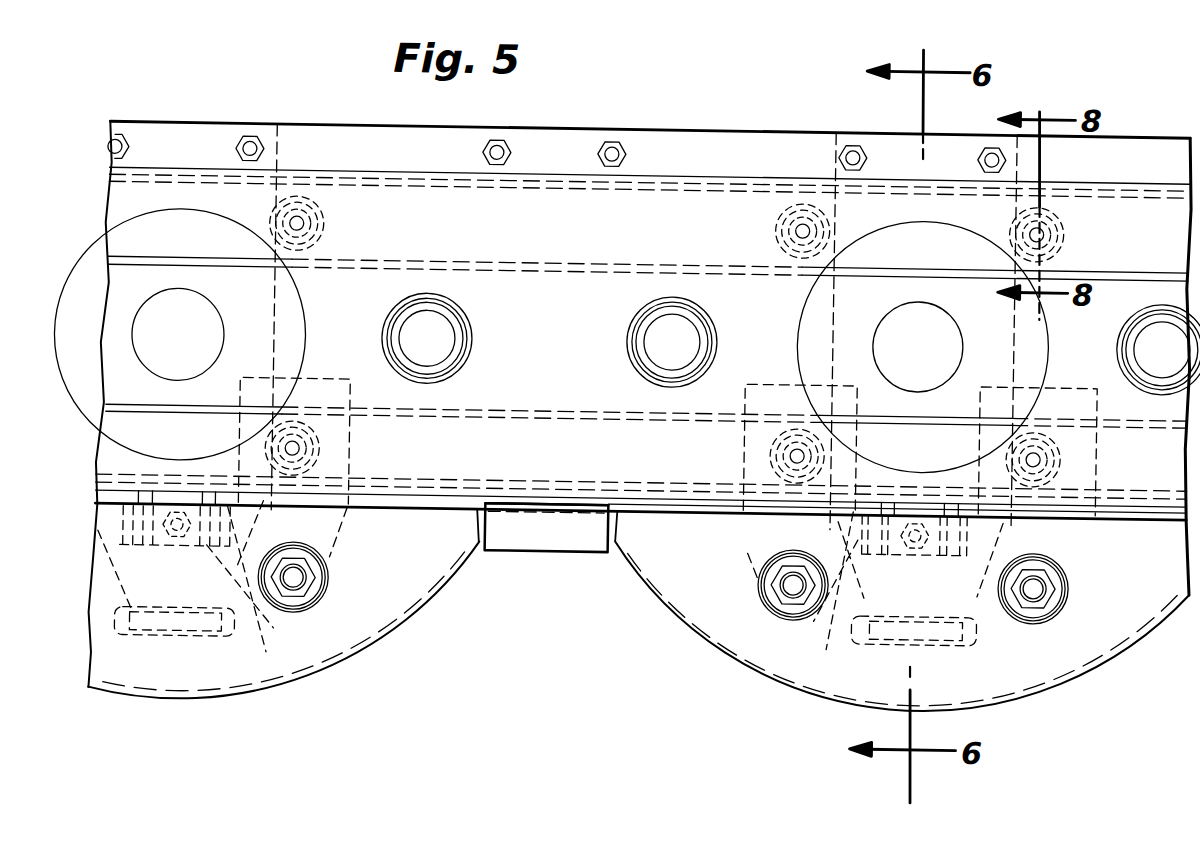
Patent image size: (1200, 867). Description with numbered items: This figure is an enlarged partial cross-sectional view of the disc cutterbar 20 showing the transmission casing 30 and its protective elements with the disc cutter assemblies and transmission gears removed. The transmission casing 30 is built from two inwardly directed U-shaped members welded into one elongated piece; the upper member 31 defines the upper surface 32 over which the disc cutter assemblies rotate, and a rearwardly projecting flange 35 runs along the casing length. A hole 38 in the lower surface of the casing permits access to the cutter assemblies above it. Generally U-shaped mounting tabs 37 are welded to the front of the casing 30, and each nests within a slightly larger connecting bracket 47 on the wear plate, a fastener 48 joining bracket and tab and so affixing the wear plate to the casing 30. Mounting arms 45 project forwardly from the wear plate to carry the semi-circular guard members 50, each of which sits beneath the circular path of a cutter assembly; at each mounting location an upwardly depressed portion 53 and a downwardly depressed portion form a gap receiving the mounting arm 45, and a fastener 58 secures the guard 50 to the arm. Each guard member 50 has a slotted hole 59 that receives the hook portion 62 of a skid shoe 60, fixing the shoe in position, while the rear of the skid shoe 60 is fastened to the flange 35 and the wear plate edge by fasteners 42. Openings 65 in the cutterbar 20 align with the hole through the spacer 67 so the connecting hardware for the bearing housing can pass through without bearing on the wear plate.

The cutterbar 20 is at (541, 650).
The transmission casing 30 is at (640, 213).
The upper member 31 is at (434, 216).
The upper surface 32 is at (790, 343).
The rearwardly projecting flange 35 is at (340, 149).
The mounting tab 37 is at (830, 646).
The hole 38 is at (955, 326).
The fasteners 42 is at (242, 142).
The mounting arms 45 is at (341, 550).
The connecting bracket 47 is at (817, 618).
The fastener 48 is at (192, 562).
The guard members 50 is at (204, 708).
The upwardly depressed portion 53 is at (322, 584).
The fastener 58 is at (318, 575).
The slotted hole 59 is at (120, 641).
The skid shoe 60 is at (272, 335).
The hook portion 62 is at (176, 644).
The openings 65 is at (795, 228).
The spacer 67 is at (787, 219).